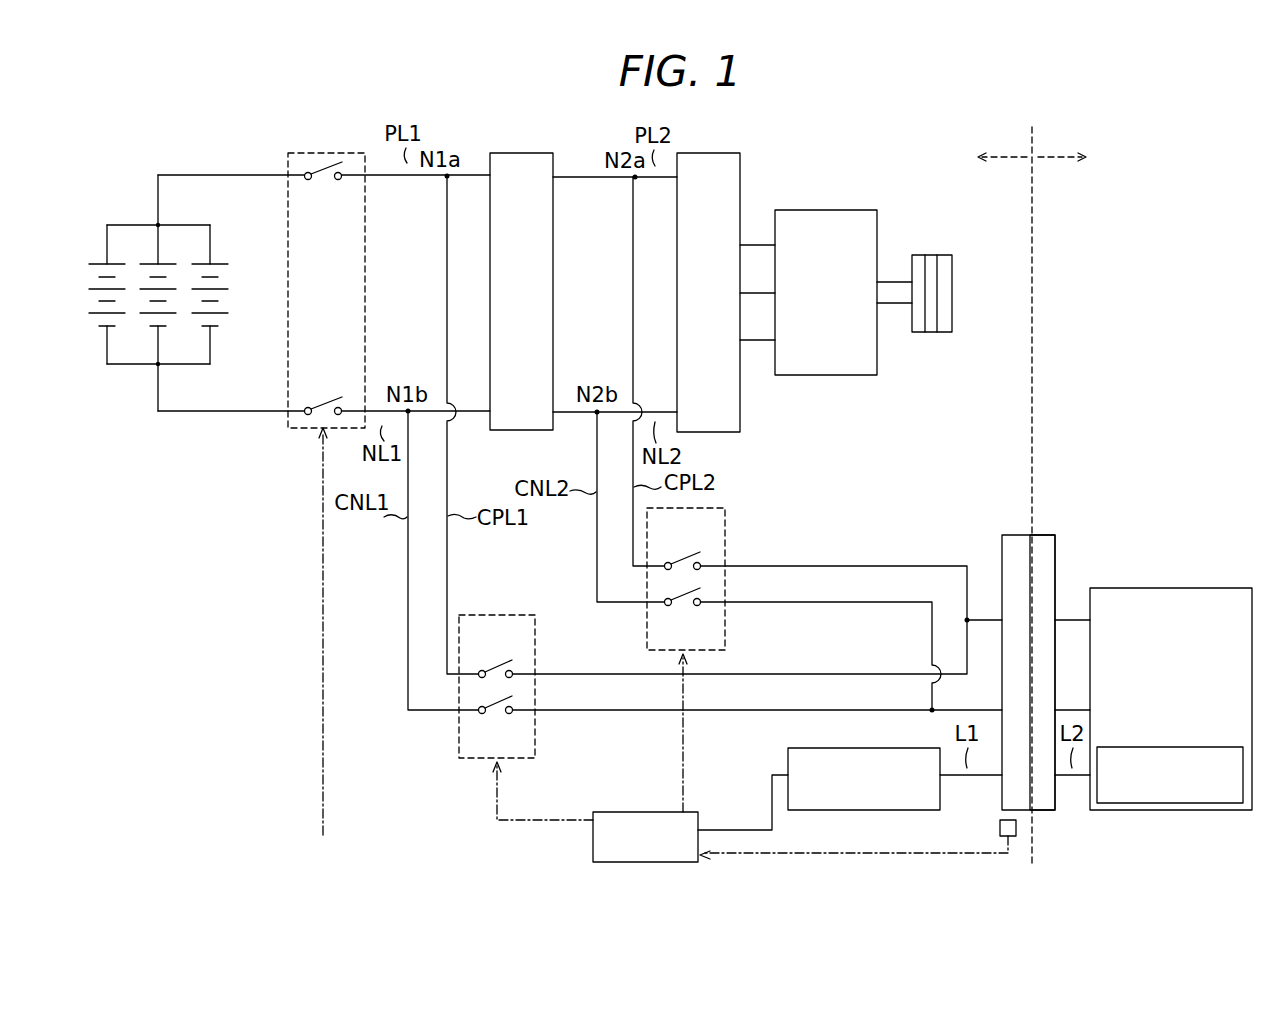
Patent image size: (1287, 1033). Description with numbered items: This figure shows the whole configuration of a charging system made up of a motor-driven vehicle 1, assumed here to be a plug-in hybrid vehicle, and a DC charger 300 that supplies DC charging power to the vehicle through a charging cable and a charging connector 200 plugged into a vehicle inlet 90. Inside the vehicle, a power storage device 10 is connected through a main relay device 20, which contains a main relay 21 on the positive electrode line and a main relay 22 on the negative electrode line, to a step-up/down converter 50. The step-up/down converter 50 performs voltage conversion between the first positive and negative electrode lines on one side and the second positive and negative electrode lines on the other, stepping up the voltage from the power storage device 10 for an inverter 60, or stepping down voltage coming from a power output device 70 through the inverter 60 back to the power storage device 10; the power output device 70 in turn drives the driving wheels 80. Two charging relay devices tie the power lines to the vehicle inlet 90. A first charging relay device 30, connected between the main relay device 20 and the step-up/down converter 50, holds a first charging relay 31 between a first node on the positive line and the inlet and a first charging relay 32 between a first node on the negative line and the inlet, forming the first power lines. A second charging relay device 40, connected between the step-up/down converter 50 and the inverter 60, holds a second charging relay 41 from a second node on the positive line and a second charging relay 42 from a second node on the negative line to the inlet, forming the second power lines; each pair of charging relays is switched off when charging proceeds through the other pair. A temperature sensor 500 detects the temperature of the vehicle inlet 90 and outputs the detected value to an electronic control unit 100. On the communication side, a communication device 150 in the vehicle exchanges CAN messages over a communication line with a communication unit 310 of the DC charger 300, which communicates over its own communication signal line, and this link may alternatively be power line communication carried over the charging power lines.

The motor-driven vehicle 1 is at (142, 164).
The power storage device 10 is at (117, 209).
The main relay device 20 is at (325, 153).
The main relay 21 is at (325, 184).
The main relay 22 is at (322, 402).
The first charging relay device 30 is at (513, 615).
The first charging relay 31 is at (494, 663).
The first charging relay 32 is at (495, 722).
The second charging relay device 40 is at (717, 508).
The second charging relay 41 is at (681, 556).
The second charging relay 42 is at (682, 615).
The step-up/down converter 50 is at (532, 153).
The inverter 60 is at (720, 153).
The power output device 70 is at (840, 211).
The driving wheels 80 is at (942, 255).
The vehicle inlet 90 is at (1005, 535).
The electronic control unit (ECU) 100 is at (628, 812).
The communication device 150 is at (890, 748).
The charging connector 200 is at (1050, 535).
The DC charger 300 is at (1195, 588).
The communication unit 310 is at (1177, 747).
The temperature sensor 500 is at (999, 829).